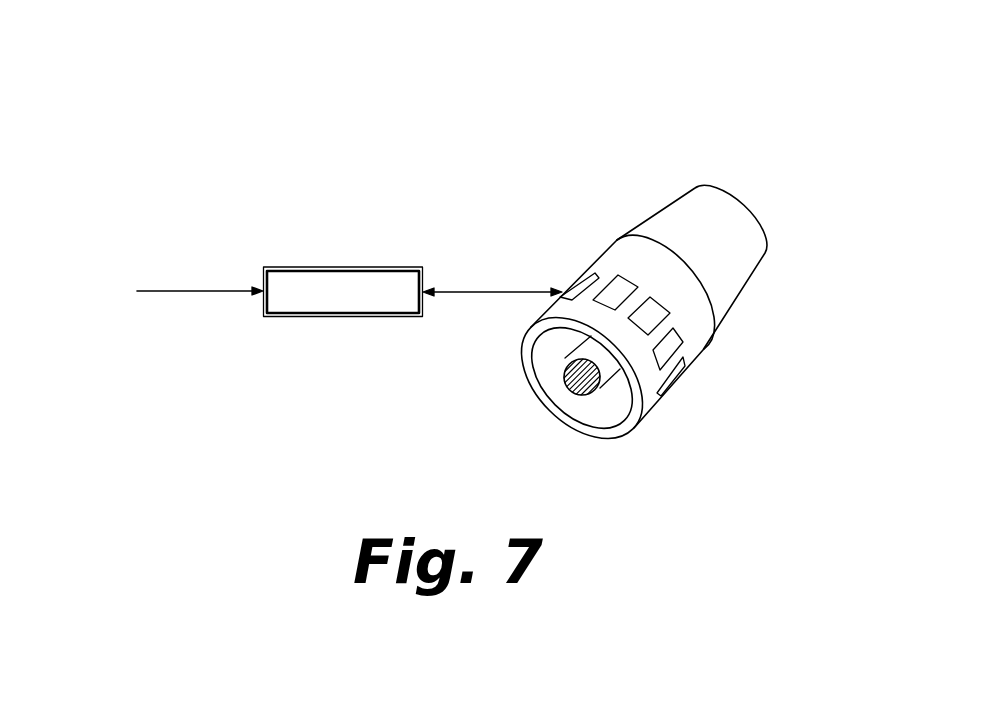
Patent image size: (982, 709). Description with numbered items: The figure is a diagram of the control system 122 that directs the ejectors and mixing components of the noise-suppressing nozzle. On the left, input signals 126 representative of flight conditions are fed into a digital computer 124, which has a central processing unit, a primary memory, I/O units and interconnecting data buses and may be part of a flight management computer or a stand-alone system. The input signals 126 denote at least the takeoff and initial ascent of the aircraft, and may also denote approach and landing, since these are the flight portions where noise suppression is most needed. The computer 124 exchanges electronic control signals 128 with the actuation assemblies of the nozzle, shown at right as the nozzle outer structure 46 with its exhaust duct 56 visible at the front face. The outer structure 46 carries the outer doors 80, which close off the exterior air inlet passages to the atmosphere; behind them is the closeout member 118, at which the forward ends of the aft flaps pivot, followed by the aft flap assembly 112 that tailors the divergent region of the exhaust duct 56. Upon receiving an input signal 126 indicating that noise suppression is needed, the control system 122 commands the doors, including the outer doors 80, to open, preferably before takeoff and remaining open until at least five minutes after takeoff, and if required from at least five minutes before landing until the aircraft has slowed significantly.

The control system 122 is at (284, 140).
The digital computer 124 is at (365, 267).
The input signals 126 is at (168, 291).
The electronic control signals 128 is at (470, 291).
The aft flap assembly 112 is at (690, 207).
The closeout member 118 is at (702, 343).
The outer doors 80 is at (678, 384).
The outer structure 46 is at (628, 416).
The exhaust duct 56 is at (605, 395).